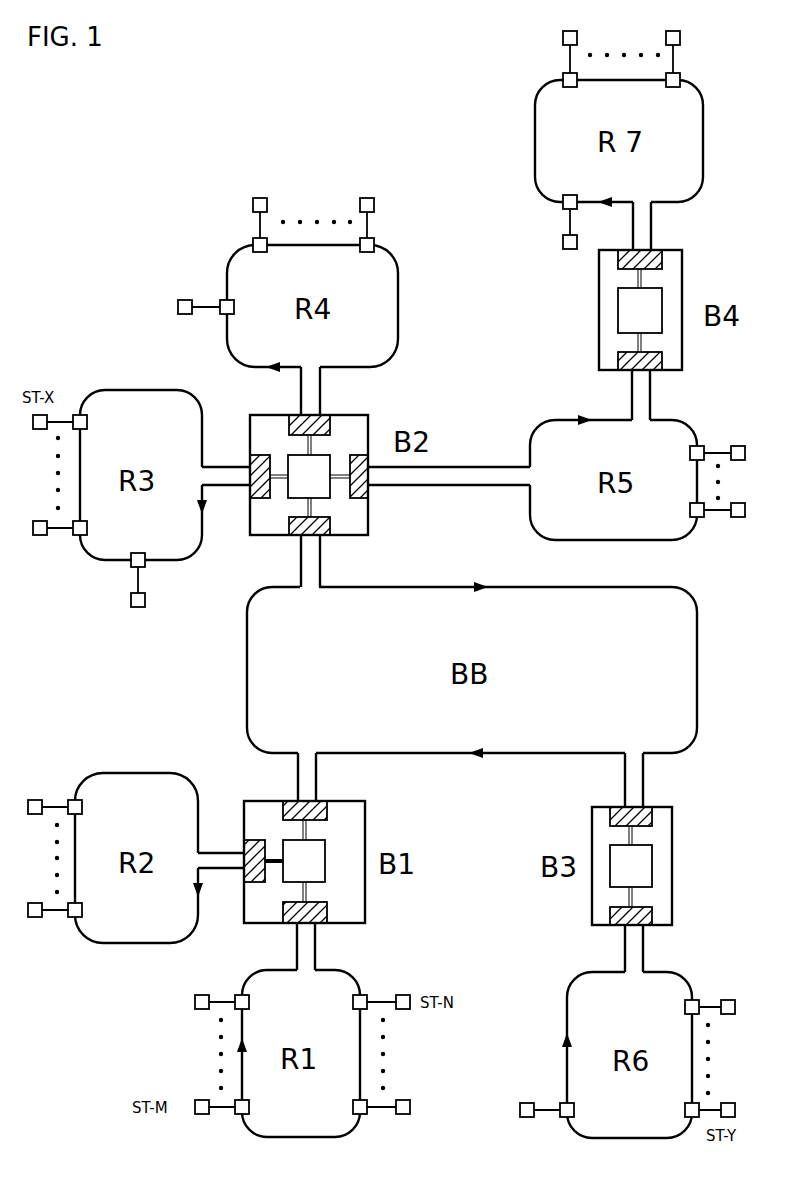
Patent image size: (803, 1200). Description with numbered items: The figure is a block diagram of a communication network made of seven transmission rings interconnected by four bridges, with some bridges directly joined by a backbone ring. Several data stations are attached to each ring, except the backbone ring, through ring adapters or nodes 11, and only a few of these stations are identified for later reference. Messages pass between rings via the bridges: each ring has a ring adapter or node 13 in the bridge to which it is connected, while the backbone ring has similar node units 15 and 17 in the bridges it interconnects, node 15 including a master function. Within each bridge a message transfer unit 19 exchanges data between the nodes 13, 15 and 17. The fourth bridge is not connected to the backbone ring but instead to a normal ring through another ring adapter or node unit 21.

The ring adapter or node 11 is at (673, 88).
The ring adapter or node 13 is at (330, 417).
The node unit 15 is at (322, 803).
The node unit 17 is at (330, 537).
The message transfer unit 19 is at (472, 587).
The ring adapter or node unit 21 is at (660, 372).